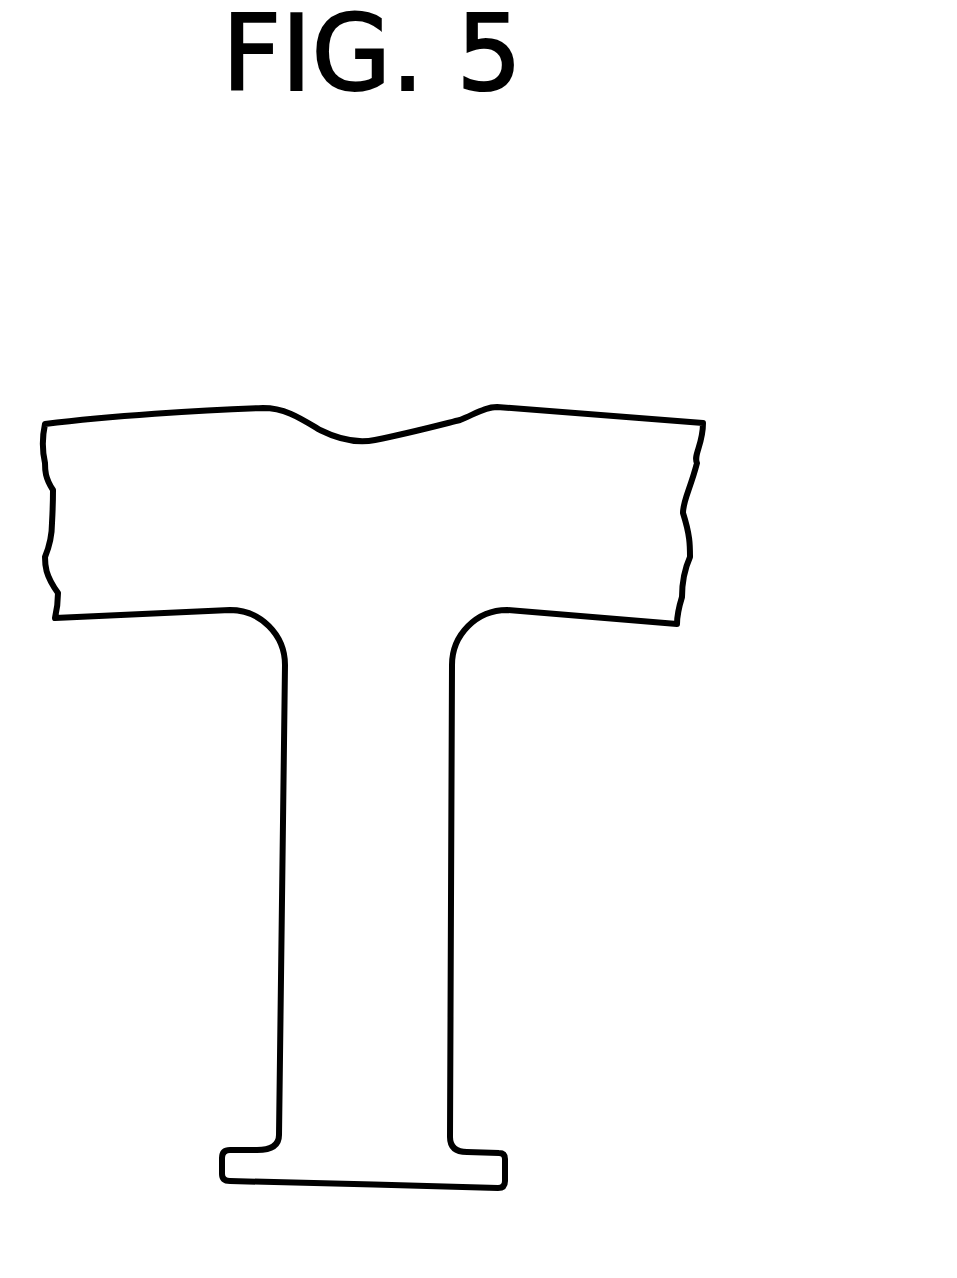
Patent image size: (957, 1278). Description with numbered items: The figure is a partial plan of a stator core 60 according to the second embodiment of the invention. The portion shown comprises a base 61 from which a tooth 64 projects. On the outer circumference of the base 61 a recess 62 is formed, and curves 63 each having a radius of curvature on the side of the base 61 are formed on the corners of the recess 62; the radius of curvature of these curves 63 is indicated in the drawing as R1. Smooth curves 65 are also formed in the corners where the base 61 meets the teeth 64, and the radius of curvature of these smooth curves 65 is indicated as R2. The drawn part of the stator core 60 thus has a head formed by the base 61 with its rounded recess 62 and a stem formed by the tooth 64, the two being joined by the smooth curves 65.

The stator core 60 is at (627, 372).
The base 61 is at (113, 458).
The recesses 62 is at (343, 430).
The curves 63 is at (308, 410).
The teeth 64 is at (415, 887).
The smooth curves 65 is at (253, 623).
The radius of curvature R1 is at (458, 423).
The radius of curvature R2 is at (485, 625).